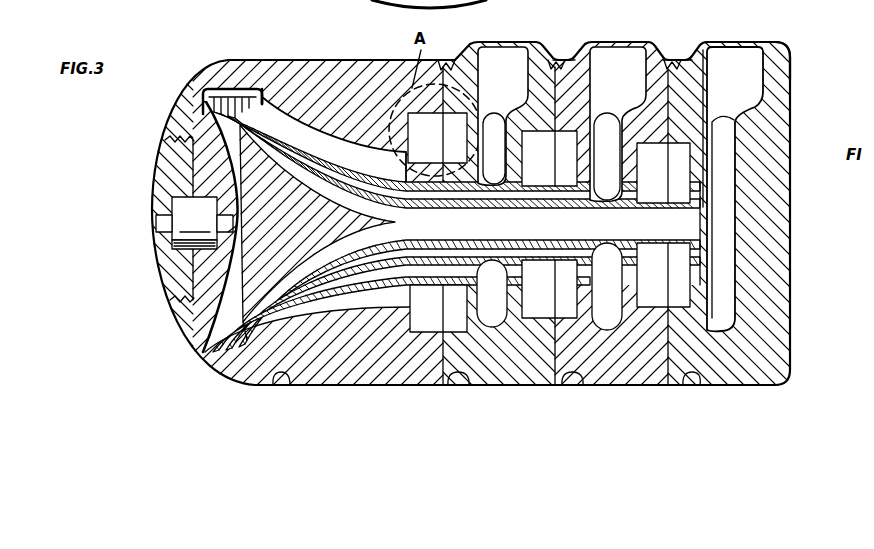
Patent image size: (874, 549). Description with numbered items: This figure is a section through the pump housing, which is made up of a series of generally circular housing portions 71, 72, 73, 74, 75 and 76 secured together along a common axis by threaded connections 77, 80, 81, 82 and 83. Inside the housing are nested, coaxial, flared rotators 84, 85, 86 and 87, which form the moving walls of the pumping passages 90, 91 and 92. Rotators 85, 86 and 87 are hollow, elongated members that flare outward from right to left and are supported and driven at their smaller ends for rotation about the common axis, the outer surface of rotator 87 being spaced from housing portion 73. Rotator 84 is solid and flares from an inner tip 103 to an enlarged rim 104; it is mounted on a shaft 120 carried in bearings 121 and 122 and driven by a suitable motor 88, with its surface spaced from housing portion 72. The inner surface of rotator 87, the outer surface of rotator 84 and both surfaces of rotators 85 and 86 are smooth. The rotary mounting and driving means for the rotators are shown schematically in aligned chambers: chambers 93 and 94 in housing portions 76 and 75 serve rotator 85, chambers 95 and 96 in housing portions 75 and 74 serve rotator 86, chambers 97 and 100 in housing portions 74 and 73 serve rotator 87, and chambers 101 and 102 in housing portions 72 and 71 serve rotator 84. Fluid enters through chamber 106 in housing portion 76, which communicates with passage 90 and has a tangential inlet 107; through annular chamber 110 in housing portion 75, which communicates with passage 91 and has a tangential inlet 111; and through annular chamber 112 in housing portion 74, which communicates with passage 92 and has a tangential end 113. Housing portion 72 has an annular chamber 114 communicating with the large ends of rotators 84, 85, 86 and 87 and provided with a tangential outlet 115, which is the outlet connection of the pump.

The housing portion 71 is at (160, 184).
The housing portion 72 is at (186, 116).
The housing portion 73 is at (316, 62).
The housing portion 74 is at (540, 56).
The housing portion 75 is at (662, 56).
The housing portion 76 is at (780, 60).
The threaded connection 77 is at (178, 312).
The threaded connection 80 is at (291, 385).
The threaded connection 81 is at (466, 385).
The threaded connection 82 is at (579, 385).
The threaded connection 83 is at (694, 385).
The rotator 84 is at (206, 352).
The rotator 85 is at (220, 352).
The rotator 86 is at (234, 352).
The rotator 87 is at (246, 352).
The motor and driving means 88 is at (194, 218).
The pumping passage 90 is at (424, 197).
The pumping passage 91 is at (452, 200).
The pumping passage 92 is at (480, 195).
The chamber 93 is at (680, 178).
The chamber 94 is at (660, 168).
The chamber 95 is at (566, 165).
The chamber 96 is at (546, 156).
The chamber 97 is at (452, 146).
The chamber 100 is at (436, 138).
The chamber 101 is at (230, 232).
The chamber 102 is at (170, 246).
The inner tip 103 is at (348, 227).
The enlarged rim 104 is at (212, 88).
The chamber 106 is at (726, 228).
The tangential inlet 107 is at (734, 56).
The annular chamber 110 is at (606, 200).
The tangential inlet 111 is at (610, 58).
The annular chamber 112 is at (494, 128).
The tangential end 113 is at (496, 48).
The annular chamber 114 is at (263, 88).
The tangential outlet 115 is at (263, 100).
The shaft 120 is at (236, 223).
The bearing 121 is at (298, 227).
The bearing 122 is at (156, 225).